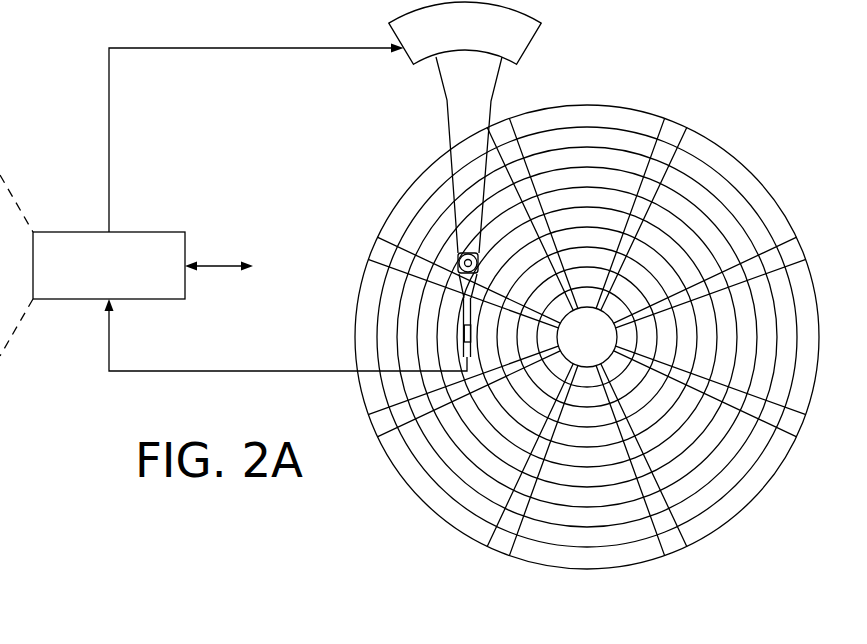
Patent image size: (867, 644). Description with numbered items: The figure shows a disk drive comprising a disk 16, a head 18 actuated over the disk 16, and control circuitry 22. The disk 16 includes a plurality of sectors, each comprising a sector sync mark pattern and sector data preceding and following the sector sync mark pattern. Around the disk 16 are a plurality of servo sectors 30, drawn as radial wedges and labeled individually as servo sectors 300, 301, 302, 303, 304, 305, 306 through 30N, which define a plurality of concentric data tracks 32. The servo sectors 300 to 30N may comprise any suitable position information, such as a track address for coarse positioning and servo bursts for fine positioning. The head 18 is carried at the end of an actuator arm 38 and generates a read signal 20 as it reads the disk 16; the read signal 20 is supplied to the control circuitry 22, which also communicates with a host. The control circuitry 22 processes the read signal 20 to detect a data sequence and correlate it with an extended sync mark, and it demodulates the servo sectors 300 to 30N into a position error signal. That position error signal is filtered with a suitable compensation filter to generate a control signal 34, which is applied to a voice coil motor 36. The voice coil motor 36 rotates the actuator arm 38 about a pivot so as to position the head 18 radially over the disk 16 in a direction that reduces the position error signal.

The disk 16 is at (400, 500).
The head 18 is at (451, 344).
The read signal 20 is at (247, 372).
The control circuitry 22 is at (148, 232).
The servo sectors 30 is at (591, 341).
The servo sector 300 is at (682, 125).
The servo sector 301 is at (795, 253).
The servo sector 302 is at (796, 429).
The servo sector 303 is at (668, 546).
The servo sector 304 is at (498, 546).
The servo sector 305 is at (377, 428).
The servo sector 306 is at (382, 245).
The servo sector 30N is at (505, 128).
The data tracks 32 is at (582, 138).
The control signal 34 is at (109, 122).
The voice coil motor 36 is at (408, 56).
The actuator arm 38 is at (448, 137).